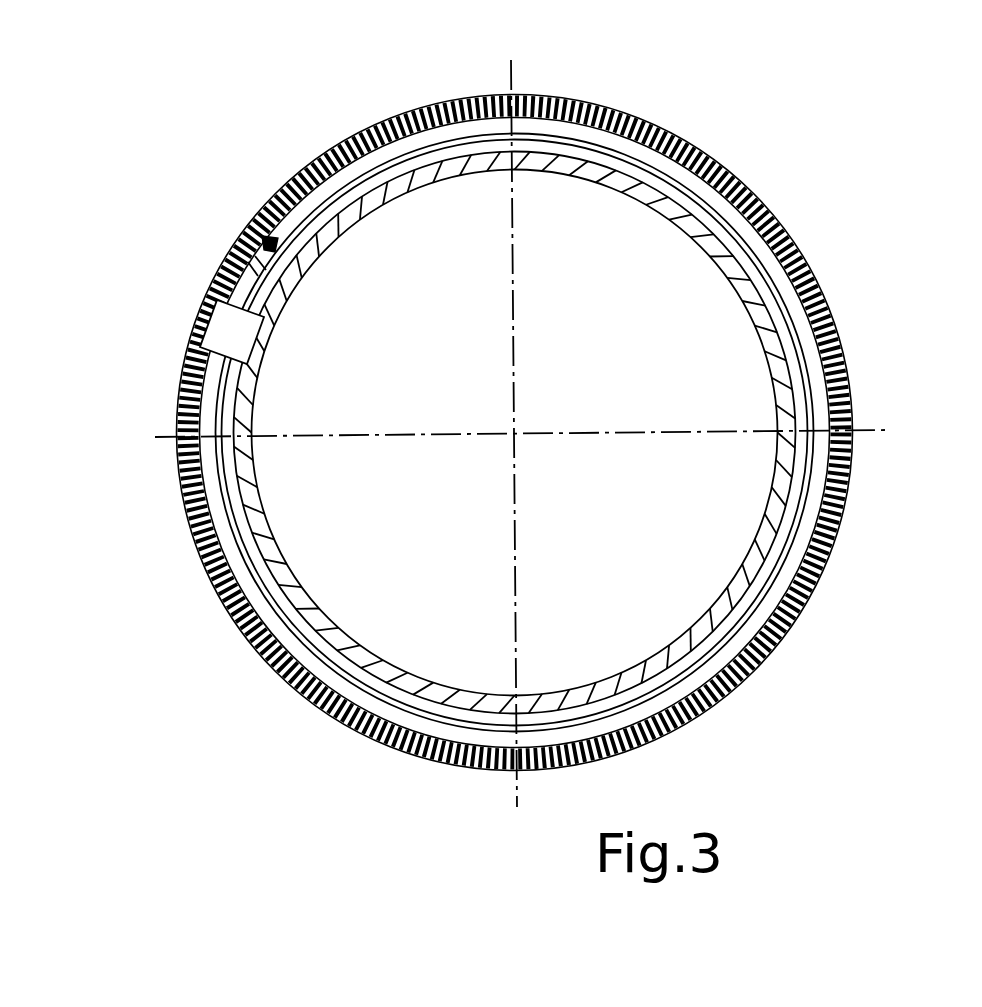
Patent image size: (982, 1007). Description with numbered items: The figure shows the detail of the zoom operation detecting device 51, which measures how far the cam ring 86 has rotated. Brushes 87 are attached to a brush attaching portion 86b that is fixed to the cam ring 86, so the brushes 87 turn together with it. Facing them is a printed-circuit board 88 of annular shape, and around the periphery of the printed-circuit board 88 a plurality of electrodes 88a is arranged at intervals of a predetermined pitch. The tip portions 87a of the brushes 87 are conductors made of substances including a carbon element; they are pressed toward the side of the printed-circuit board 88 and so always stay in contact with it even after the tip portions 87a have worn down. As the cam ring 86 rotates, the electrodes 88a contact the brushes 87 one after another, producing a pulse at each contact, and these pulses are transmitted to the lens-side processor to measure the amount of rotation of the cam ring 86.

The zoom operation detecting device 51 is at (758, 126).
The cam ring 86 is at (302, 273).
The brush attaching portion 86b is at (213, 320).
The brushes 87 is at (236, 243).
The tip portions 87a is at (273, 205).
The printed-circuit board 88 is at (213, 503).
The electrodes 88a is at (220, 603).